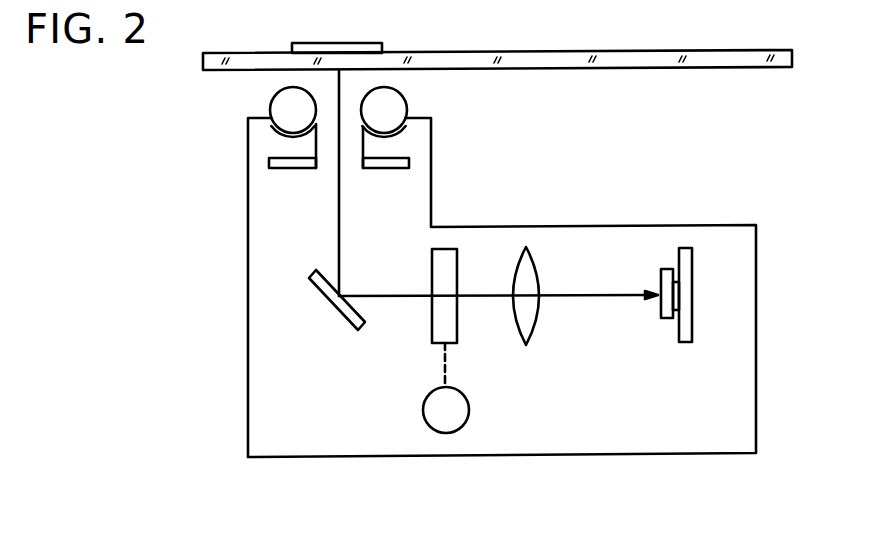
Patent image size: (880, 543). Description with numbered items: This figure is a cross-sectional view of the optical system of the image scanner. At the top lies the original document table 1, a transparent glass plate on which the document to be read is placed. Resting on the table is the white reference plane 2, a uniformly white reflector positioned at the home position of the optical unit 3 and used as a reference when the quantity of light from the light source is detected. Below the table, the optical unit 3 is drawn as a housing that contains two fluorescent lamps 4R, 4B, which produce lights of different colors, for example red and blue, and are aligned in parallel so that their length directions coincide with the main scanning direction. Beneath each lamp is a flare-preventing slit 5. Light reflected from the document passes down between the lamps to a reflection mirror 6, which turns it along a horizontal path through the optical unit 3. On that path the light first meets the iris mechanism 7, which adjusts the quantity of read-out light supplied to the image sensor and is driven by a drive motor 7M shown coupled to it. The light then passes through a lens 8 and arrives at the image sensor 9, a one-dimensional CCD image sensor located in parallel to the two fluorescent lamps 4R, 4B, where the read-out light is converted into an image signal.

The original document table 1 is at (658, 58).
The white reference plane 2 is at (373, 43).
The optical unit 3 is at (740, 278).
The fluorescent lamp 4R is at (280, 108).
The fluorescent lamp 4B is at (392, 100).
The flare-preventing slit 5 is at (293, 168).
The reflection mirror 6 is at (352, 324).
The iris mechanism 7 is at (452, 326).
The drive motor 7M is at (469, 410).
The lens 8 is at (532, 318).
The image sensor 9 is at (665, 318).